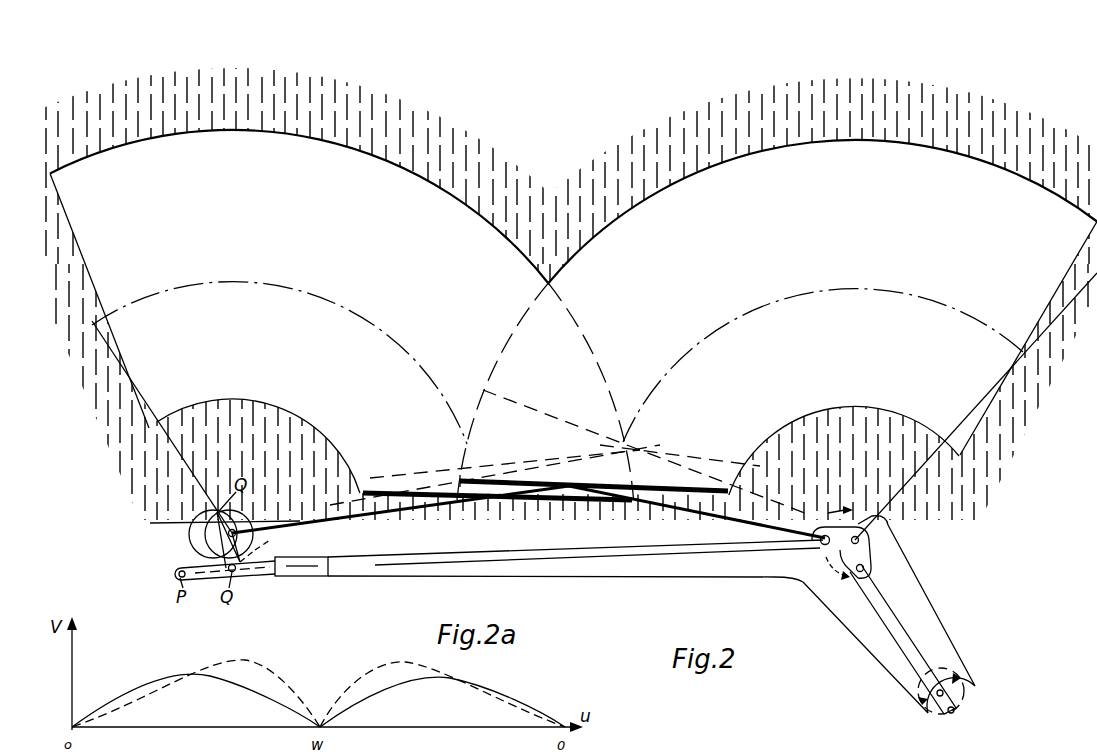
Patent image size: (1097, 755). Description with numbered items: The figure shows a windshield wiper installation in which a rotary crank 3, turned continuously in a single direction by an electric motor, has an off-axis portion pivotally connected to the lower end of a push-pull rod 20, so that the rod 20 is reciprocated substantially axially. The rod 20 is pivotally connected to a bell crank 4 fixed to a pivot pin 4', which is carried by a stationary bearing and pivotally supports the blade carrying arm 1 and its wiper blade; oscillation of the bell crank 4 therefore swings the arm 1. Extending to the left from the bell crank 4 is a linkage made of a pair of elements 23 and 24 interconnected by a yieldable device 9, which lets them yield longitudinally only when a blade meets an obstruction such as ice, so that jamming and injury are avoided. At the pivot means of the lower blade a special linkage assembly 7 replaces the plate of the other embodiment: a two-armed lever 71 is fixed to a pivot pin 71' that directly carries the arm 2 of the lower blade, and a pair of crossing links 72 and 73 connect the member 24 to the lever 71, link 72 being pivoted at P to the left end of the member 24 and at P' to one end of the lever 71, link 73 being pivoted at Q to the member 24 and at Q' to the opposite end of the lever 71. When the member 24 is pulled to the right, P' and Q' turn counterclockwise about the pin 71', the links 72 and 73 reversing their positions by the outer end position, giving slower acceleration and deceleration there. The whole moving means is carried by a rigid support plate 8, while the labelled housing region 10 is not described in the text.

In FIG. 2, the housing / stator structure 10 is at (571, 300).
In FIG. 2, the blade carrying arm 1 is at (655, 488).
In FIG. 2A, the blade carrying arm 1 is at (150, 696).
In FIG. 2, the arm 2 is at (455, 494).
In FIG. 2A, the arm 2 is at (242, 668).
In FIG. 2, the linkage assembly 7 is at (160, 548).
In FIG. 2, the link 73 is at (203, 538).
In FIG. 2, the two-armed lever 71 is at (527, 518).
In FIG. 2, the pivot pin 71' is at (256, 524).
In FIG. 2, the link 72 is at (220, 557).
In FIG. 2, the yieldable device 9 is at (307, 570).
In FIG. 2, the member 24 is at (262, 578).
In FIG. 2, the element 23 is at (545, 556).
In FIG. 2, the pivot pin 4' is at (870, 525).
In FIG. 2, the bell crank 4 is at (841, 563).
In FIG. 2, the support plate 8 is at (923, 603).
In FIG. 2, the push-pull rod 20 is at (893, 622).
In FIG. 2, the rotary crank 3 is at (962, 688).